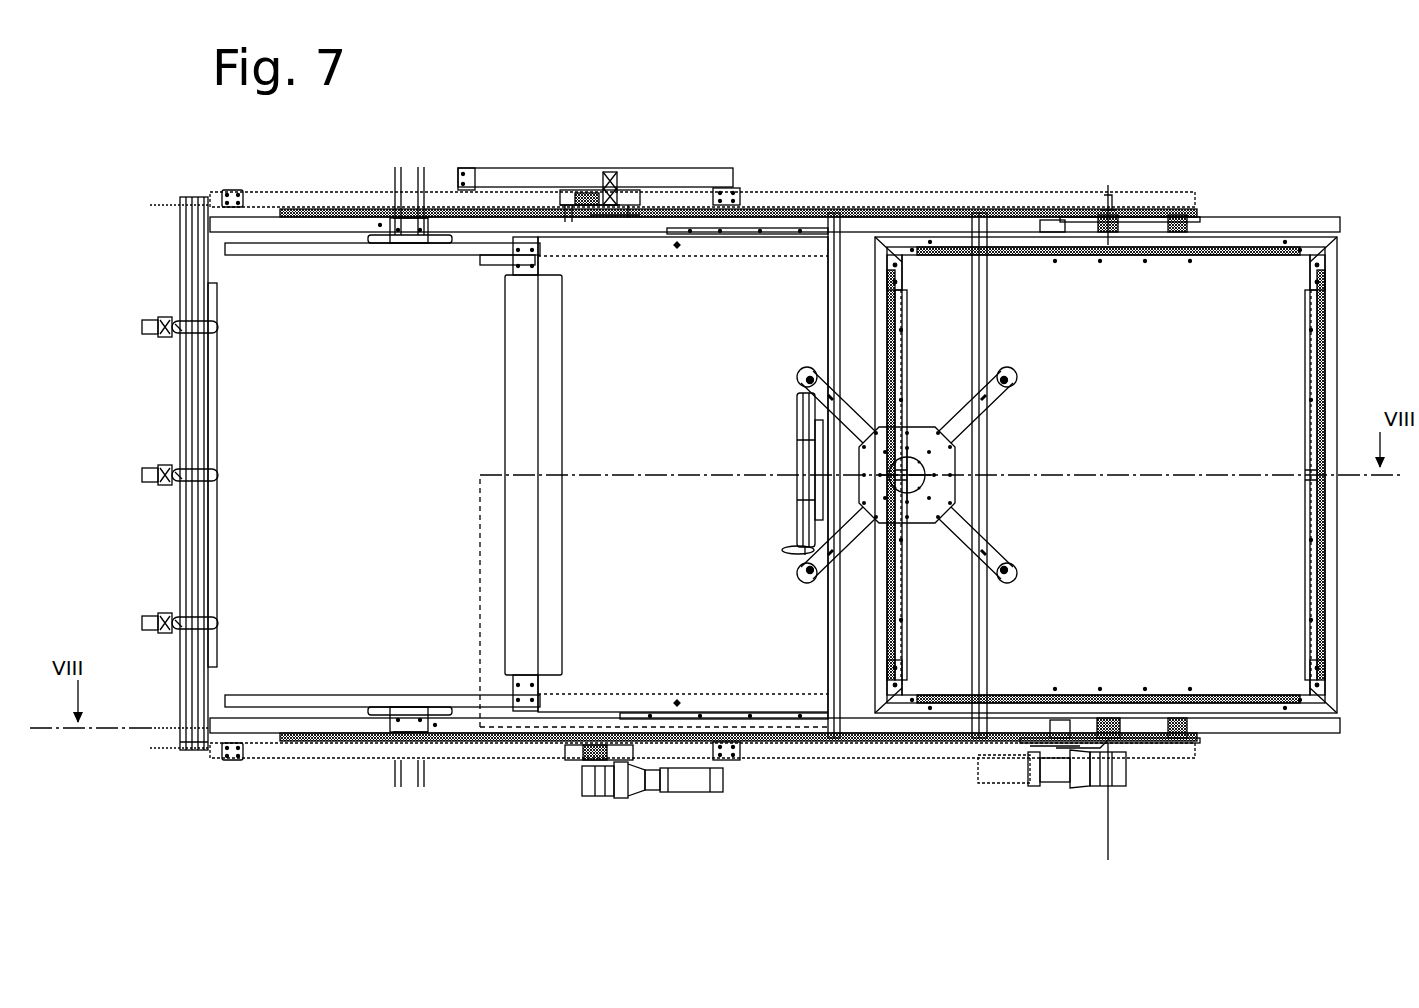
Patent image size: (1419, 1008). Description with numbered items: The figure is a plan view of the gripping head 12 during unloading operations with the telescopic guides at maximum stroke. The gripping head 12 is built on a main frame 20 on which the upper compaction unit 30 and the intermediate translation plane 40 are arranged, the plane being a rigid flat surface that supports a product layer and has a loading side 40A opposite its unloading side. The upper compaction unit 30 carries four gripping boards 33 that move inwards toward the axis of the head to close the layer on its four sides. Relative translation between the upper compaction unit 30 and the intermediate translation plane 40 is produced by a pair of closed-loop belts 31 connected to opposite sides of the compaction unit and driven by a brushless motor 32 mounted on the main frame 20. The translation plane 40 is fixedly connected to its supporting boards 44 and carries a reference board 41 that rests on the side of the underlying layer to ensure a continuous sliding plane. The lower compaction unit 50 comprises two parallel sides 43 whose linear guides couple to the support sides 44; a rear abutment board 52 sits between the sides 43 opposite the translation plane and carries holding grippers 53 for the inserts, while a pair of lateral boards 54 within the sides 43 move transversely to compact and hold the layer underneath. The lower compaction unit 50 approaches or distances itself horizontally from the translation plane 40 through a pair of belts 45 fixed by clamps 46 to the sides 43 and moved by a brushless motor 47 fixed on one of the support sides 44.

The gripping head 12 is at (1212, 815).
The main frame 20 is at (912, 203).
The upper compaction unit 30 is at (1340, 305).
The belts 31 is at (1020, 232).
The brushless motor 32 is at (1005, 772).
The gripping boards 33 is at (1312, 298).
The intermediate translation plane 40 is at (650, 408).
The loading side 40A is at (505, 430).
The reference board 41 is at (546, 408).
The sides 43 is at (209, 197).
The supporting boards 44 is at (520, 236).
The belts 45 is at (283, 192).
The clamps 46 is at (231, 190).
The brushless motor 47 is at (695, 782).
The lower compaction unit 50 is at (447, 762).
The rear abutment board 52 is at (213, 392).
The holding grippers 53 is at (160, 325).
The lateral boards 54 is at (302, 250).